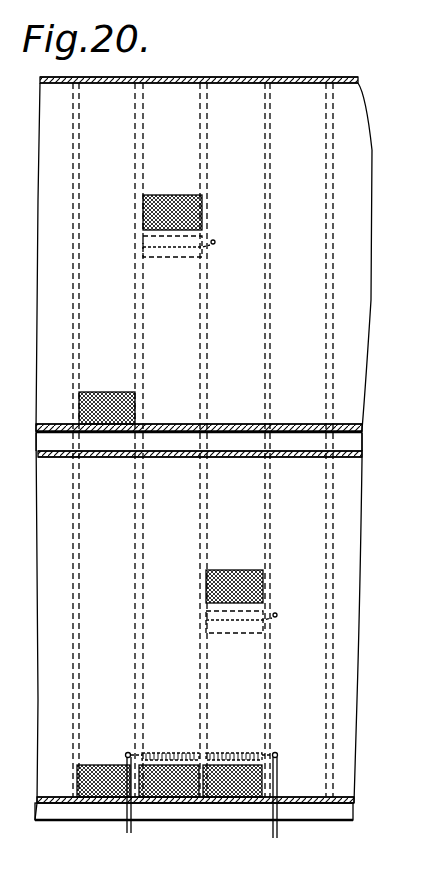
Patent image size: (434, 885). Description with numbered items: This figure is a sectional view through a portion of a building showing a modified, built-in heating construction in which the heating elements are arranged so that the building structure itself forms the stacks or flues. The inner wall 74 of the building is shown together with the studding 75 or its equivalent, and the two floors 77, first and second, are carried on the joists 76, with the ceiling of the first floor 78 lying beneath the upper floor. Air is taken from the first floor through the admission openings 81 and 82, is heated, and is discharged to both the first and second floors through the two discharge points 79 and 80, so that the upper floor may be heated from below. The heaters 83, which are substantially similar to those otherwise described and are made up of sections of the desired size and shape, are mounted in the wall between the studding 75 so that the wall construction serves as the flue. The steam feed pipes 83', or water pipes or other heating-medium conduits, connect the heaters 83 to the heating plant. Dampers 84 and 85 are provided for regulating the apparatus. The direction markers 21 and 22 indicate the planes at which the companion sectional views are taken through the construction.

The section line for Fig. 21 is at (186, 68).
The section line for Fig. 22 is at (237, 554).
The inner wall 74 is at (345, 680).
The studding 75 is at (329, 650).
The joists 76 is at (362, 446).
The floors 77 is at (290, 424).
The ceiling of the first floor 78 is at (303, 458).
The discharge point 79 is at (222, 586).
The discharge point 80 is at (152, 215).
The admission 81 is at (228, 775).
The admission 82 is at (162, 800).
The heaters 83 is at (201, 740).
The steam feed pipes 83' is at (205, 810).
The damper 84 is at (223, 633).
The damper 85 is at (178, 258).